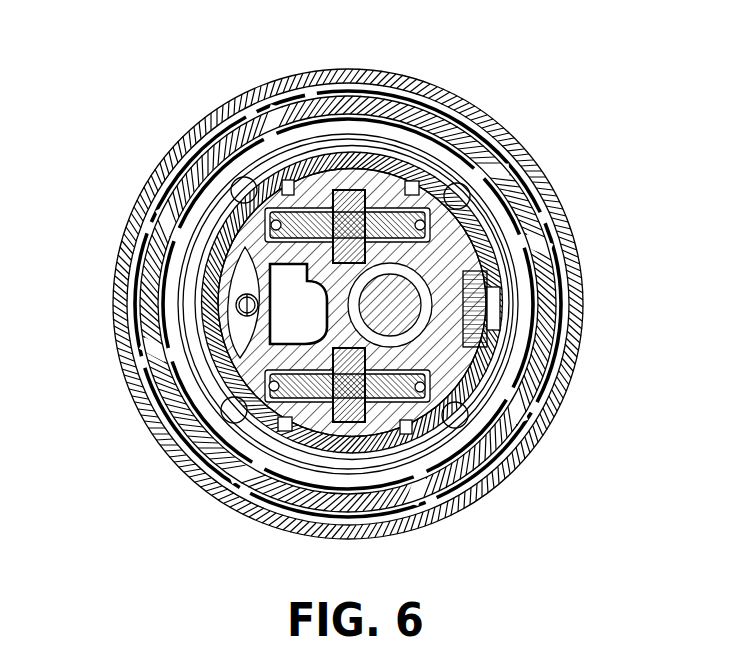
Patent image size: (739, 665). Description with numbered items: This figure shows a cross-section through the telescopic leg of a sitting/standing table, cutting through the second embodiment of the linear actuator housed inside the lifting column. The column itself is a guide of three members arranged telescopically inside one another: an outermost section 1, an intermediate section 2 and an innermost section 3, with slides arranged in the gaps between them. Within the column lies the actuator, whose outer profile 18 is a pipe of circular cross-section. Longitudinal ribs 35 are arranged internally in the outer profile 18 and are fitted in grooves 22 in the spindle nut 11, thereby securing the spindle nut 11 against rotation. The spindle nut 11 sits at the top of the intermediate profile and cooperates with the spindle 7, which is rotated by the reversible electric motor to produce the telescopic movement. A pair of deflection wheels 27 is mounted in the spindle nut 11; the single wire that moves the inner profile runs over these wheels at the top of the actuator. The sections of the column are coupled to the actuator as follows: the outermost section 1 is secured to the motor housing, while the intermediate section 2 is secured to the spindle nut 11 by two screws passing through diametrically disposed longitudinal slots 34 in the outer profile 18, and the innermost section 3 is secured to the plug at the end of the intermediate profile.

The outermost section 1 is at (570, 227).
The intermediate section 2 is at (544, 185).
The innermost section 3 is at (497, 193).
The spindle 7 is at (418, 322).
The spindle nut 11 is at (238, 237).
The outer profile 18 is at (200, 250).
The grooves 22 is at (322, 192).
The deflection wheels 27 is at (275, 245).
The longitudinal slots 34 is at (235, 305).
The longitudinal ribs 35 is at (290, 185).